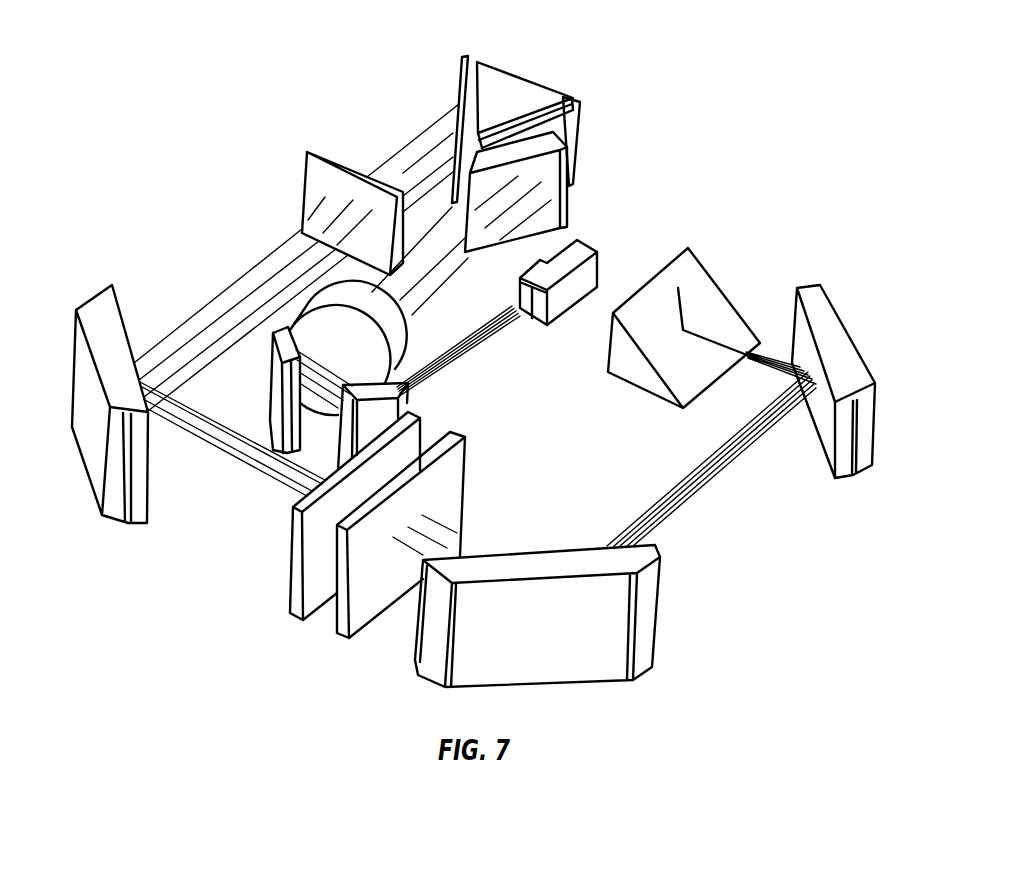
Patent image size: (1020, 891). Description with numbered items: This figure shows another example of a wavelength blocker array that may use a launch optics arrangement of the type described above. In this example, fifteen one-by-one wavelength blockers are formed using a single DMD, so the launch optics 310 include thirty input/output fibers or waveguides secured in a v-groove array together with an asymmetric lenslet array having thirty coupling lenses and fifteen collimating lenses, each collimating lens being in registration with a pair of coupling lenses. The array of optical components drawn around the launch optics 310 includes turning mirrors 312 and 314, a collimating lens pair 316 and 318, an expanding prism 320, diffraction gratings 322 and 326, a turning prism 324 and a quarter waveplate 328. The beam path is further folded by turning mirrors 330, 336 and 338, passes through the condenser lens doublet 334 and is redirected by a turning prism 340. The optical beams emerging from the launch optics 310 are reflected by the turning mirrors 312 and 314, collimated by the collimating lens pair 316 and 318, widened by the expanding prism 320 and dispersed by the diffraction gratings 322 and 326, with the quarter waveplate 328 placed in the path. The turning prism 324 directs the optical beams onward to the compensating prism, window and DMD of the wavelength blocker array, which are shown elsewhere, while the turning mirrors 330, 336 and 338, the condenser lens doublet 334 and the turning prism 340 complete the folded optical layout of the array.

The launch optics 310 is at (582, 250).
The turning mirror 312 is at (340, 443).
The turning mirror 314 is at (280, 328).
The collimating lens 316 is at (316, 304).
The collimating lens 318 is at (394, 336).
The expanding prism 320 is at (560, 210).
The diffraction grating 322 is at (287, 587).
The turning prism 324 is at (520, 93).
The diffraction grating 326 is at (457, 98).
The quarter waveplate 328 is at (320, 178).
The turning mirror 330 is at (98, 308).
The condenser lens doublet 334 is at (465, 477).
The turning mirror 336 is at (647, 622).
The turning mirror 338 is at (845, 327).
The turning prism 340 is at (712, 310).